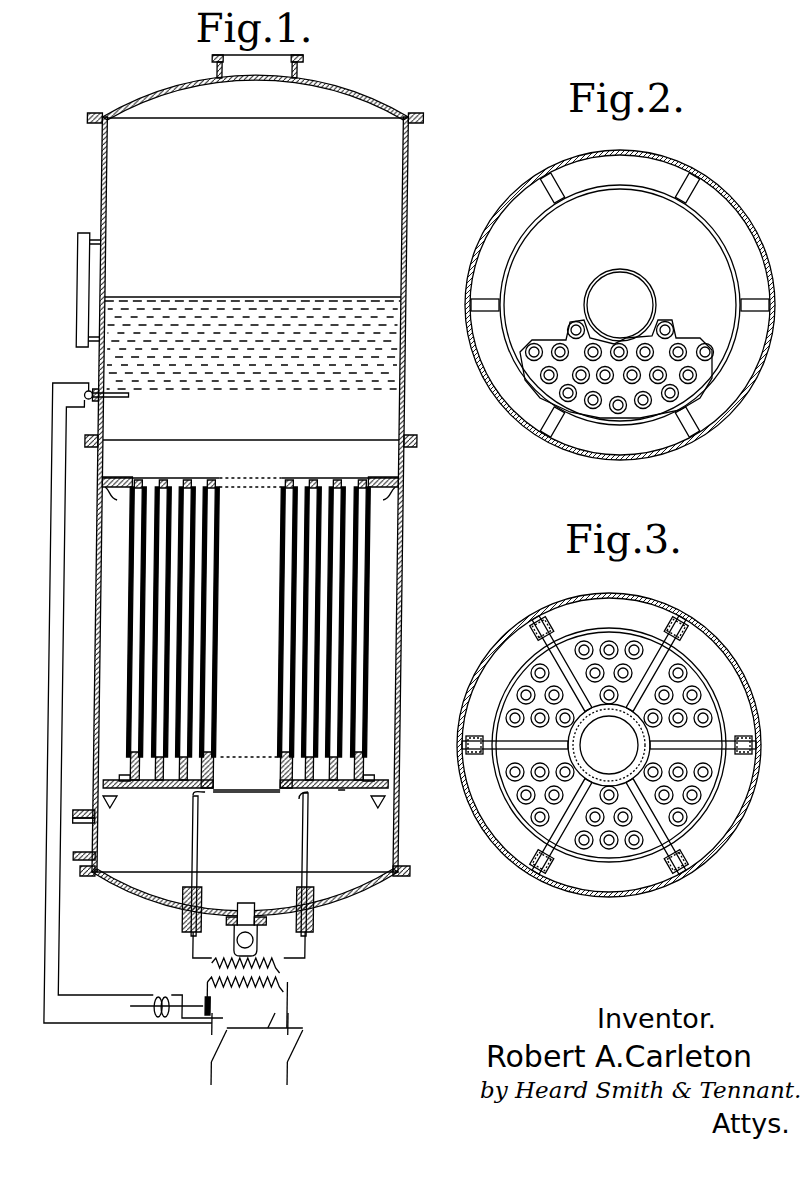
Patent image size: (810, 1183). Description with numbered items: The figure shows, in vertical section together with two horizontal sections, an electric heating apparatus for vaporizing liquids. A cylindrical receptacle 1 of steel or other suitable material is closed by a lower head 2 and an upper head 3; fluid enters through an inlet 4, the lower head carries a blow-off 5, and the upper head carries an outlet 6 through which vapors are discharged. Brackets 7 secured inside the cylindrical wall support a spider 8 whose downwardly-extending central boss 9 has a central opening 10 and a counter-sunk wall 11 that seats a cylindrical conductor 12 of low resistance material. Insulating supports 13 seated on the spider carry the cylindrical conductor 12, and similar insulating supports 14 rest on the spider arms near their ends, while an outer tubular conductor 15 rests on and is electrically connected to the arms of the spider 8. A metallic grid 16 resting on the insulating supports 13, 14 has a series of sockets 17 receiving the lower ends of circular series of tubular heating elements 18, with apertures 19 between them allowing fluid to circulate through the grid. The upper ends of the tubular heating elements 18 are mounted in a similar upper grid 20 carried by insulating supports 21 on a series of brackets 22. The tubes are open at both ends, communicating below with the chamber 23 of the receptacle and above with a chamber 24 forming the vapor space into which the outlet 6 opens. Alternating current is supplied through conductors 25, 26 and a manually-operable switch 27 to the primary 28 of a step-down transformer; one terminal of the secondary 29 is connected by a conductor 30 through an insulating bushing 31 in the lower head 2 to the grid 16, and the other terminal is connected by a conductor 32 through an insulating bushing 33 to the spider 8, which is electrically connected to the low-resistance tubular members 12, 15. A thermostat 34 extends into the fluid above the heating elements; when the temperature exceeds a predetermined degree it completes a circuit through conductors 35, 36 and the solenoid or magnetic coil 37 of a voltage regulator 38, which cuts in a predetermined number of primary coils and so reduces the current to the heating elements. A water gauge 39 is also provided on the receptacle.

In FIG. 1, the cylindrical receptacle 1 is at (413, 624).
In FIG. 2, the cylindrical receptacle 1 is at (733, 197).
In FIG. 3, the cylindrical receptacle 1 is at (718, 640).
In FIG. 1, the lower head 2 is at (436, 466).
In FIG. 1, the upper head 3 is at (340, 85).
In FIG. 1, the inlet 4 is at (99, 866).
In FIG. 1, the blow-off 5 is at (267, 935).
In FIG. 1, the outlet 6 is at (271, 66).
In FIG. 1, the brackets 7 is at (121, 808).
In FIG. 3, the brackets 7 is at (683, 618).
In FIG. 1, the spider 8 is at (349, 790).
In FIG. 3, the spider 8 is at (733, 722).
In FIG. 1, the central boss 9 is at (298, 796).
In FIG. 3, the central boss 9 is at (609, 706).
In FIG. 1, the central opening 10 is at (268, 793).
In FIG. 1, the counter-sunk wall 11 is at (236, 795).
In FIG. 1, the cylindrical conductor 12 is at (233, 718).
In FIG. 2, the cylindrical conductor 12 is at (602, 270).
In FIG. 1, the insulating supports 13 is at (226, 772).
In FIG. 1, the insulating supports 14 is at (376, 768).
In FIG. 1, the outer tubular conductor 15 is at (376, 718).
In FIG. 2, the outer tubular conductor 15 is at (740, 340).
In FIG. 3, the outer tubular conductor 15 is at (707, 813).
In FIG. 1, the metallic grid 16 is at (196, 764).
In FIG. 3, the metallic grid 16 is at (587, 843).
In FIG. 3, the sockets 17 is at (543, 808).
In FIG. 1, the tubular heating elements 18 is at (357, 674).
In FIG. 2, the tubular heating elements 18 is at (680, 388).
In FIG. 3, the tubular heating elements 18 is at (610, 645).
In FIG. 3, the apertures 19 is at (557, 812).
In FIG. 1, the upper grid 20 is at (321, 478).
In FIG. 2, the upper grid 20 is at (652, 413).
In FIG. 1, the insulating supports 21 is at (410, 478).
In FIG. 1, the brackets 22 is at (412, 494).
In FIG. 1, the chamber 23 is at (395, 850).
In FIG. 1, the chamber 24 is at (393, 256).
In FIG. 1, the conductor 25 is at (304, 1073).
In FIG. 1, the conductor 26 is at (226, 1080).
In FIG. 1, the manually-operable switch 27 is at (311, 1047).
In FIG. 1, the primary 28 is at (277, 987).
In FIG. 1, the secondary 29 is at (300, 966).
In FIG. 1, the conductor 30 is at (320, 853).
In FIG. 1, the insulating bushing 31 is at (327, 893).
In FIG. 1, the conductor 32 is at (205, 941).
In FIG. 1, the insulating bushing 33 is at (215, 896).
In FIG. 1, the thermostat 34 is at (133, 398).
In FIG. 1, the conductor 35 is at (58, 595).
In FIG. 1, the conductor 36 is at (72, 592).
In FIG. 1, the solenoid or magnetic coil 37 is at (175, 1000).
In FIG. 1, the voltage regulator 38 is at (218, 1010).
In FIG. 1, the water gauge 39 is at (81, 283).